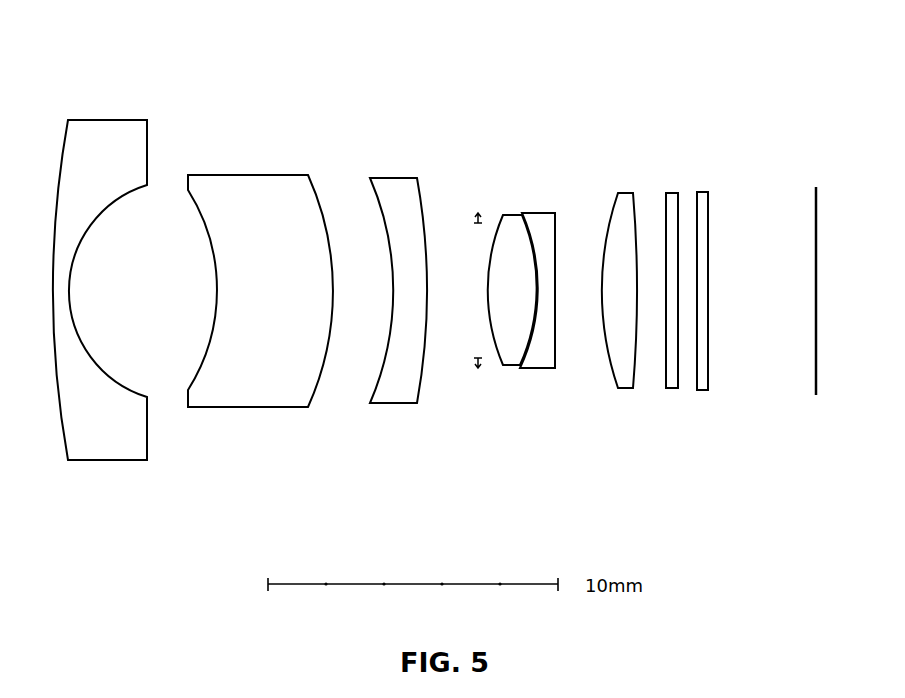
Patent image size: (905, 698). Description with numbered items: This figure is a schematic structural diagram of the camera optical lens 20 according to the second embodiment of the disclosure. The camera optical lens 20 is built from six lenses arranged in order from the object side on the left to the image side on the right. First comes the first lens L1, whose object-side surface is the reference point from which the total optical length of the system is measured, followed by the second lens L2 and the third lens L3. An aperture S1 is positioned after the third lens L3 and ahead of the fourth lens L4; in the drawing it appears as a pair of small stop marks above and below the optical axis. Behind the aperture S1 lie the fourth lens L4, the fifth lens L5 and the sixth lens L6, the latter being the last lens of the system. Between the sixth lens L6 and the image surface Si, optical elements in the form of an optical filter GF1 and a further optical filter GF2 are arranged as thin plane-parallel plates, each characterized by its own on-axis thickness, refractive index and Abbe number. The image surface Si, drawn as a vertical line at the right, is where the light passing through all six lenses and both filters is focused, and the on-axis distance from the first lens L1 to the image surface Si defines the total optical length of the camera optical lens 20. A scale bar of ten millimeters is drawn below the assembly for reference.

The camera optical lens 20 is at (461, 32).
The first lens L1 is at (100, 274).
The second lens L2 is at (260, 275).
The third lens L3 is at (398, 273).
The aperture S1 is at (475, 270).
The fourth lens L4 is at (512, 274).
The fifth lens L5 is at (537, 274).
The sixth lens L6 is at (619, 277).
The optical filter GF1 is at (669, 275).
The optical filter GF2 is at (716, 277).
The image surface Si is at (814, 275).